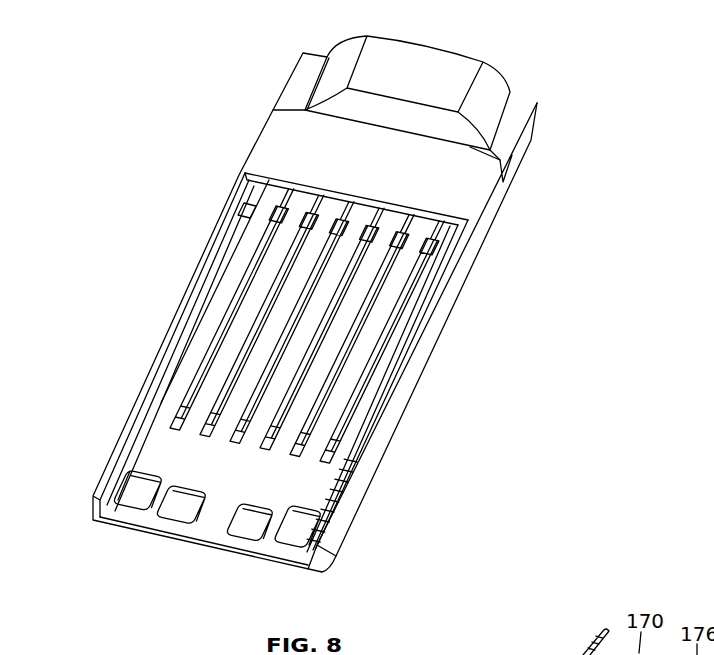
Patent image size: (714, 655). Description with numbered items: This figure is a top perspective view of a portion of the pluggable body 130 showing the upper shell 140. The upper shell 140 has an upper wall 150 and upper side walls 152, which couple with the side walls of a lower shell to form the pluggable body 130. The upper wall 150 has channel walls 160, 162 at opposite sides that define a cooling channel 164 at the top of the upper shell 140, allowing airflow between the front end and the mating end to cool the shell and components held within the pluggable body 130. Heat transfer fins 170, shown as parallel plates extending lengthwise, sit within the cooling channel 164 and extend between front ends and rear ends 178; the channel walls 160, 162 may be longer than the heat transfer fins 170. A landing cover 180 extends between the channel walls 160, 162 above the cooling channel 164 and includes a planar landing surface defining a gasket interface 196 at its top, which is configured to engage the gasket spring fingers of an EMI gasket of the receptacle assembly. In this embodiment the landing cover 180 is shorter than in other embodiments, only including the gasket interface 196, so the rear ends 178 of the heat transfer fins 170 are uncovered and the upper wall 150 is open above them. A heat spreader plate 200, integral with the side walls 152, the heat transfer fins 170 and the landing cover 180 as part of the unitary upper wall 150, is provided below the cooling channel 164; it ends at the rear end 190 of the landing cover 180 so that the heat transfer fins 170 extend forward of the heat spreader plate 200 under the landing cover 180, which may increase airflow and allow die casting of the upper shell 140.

The pluggable body 130 is at (534, 70).
The upper shell 140 is at (181, 244).
The upper wall 150 is at (163, 442).
The upper side walls 152 is at (372, 487).
The channel wall 160 is at (142, 420).
The channel wall 162 is at (356, 455).
The cooling channel 164 is at (252, 443).
The heat transfer fins 170 is at (373, 346).
The rear ends 178 is at (294, 454).
The landing cover 180 is at (447, 184).
The rear end 190 is at (265, 190).
The gasket interface 196 is at (303, 157).
The heat spreader plate 200 is at (190, 355).